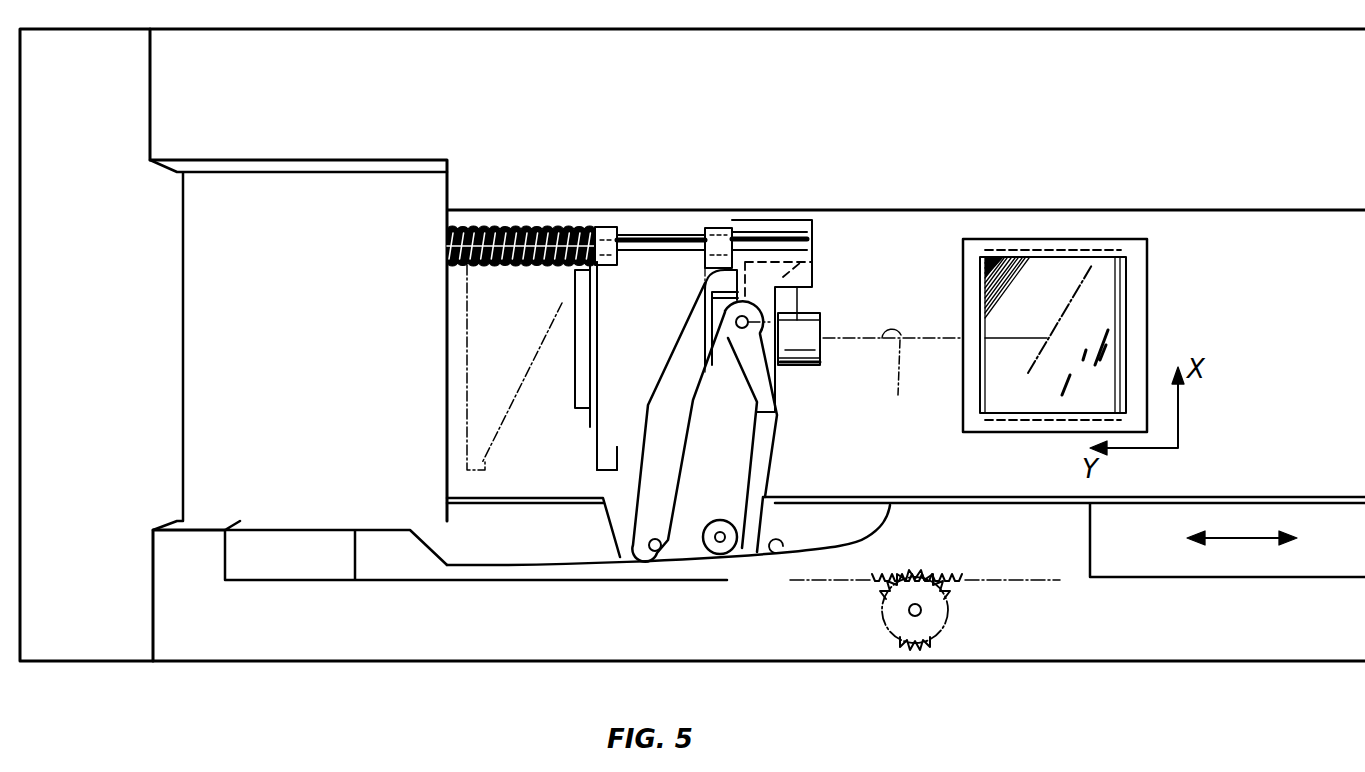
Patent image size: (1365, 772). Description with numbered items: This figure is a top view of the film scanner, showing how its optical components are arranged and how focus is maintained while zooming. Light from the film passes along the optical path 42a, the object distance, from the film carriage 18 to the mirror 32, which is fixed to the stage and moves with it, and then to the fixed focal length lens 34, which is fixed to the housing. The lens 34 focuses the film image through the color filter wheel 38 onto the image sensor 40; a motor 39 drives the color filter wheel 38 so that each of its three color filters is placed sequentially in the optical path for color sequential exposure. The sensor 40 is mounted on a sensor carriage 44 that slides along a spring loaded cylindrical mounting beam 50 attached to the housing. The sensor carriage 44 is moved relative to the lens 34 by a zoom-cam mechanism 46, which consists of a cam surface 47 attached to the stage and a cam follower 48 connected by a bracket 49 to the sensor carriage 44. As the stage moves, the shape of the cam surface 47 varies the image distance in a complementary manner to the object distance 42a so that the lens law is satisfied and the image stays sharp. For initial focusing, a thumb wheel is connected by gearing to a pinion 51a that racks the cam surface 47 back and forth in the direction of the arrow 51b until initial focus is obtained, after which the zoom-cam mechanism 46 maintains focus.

The film carriage 18 is at (1140, 315).
The mirror 32 is at (1088, 352).
The fixed focal length lens 34 is at (823, 358).
The color filter wheel 38 is at (700, 340).
The motor 39 is at (812, 262).
The image sensor 40 is at (575, 328).
The optical path 42a is at (914, 378).
The sensor carriage 44 is at (617, 408).
The zoom-cam mechanism 46 is at (765, 456).
The cam surface 47 is at (779, 555).
The cam follower 48 is at (720, 520).
The bracket 49 is at (758, 468).
The spring loaded cylindrical mounting beam 50 is at (653, 237).
The pinion 51a is at (955, 597).
The arrow 51b is at (1238, 540).